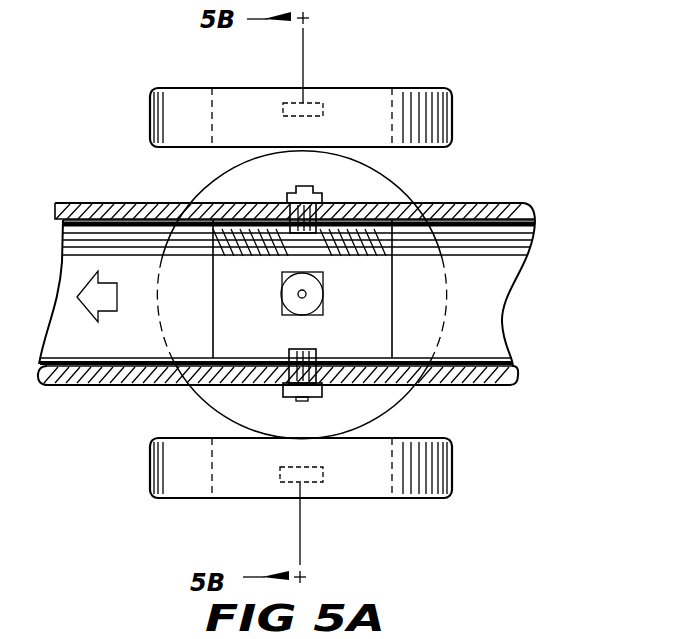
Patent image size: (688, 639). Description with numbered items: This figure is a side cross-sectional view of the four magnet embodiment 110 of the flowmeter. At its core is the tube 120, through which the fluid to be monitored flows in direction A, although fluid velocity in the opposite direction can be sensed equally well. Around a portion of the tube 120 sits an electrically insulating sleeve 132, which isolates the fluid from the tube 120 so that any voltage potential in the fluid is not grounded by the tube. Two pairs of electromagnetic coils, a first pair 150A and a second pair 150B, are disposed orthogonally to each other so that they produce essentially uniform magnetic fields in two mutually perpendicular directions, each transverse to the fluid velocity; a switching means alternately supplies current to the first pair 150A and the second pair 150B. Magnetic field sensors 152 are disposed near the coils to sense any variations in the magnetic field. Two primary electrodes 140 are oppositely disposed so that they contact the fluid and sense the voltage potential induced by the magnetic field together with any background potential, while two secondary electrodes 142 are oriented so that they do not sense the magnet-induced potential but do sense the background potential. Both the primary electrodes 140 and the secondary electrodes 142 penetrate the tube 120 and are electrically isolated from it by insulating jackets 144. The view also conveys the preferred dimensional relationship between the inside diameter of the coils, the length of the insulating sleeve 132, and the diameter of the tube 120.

The four magnet embodiment 110 is at (138, 52).
The tube 120 is at (503, 297).
The insulating sleeve 132 is at (216, 262).
The primary electrodes 140 is at (299, 296).
The secondary electrodes 142 is at (310, 247).
The insulating jackets 144 is at (293, 196).
The first pair of electromagnetic coils 150A is at (362, 94).
The second pair of electromagnetic coils 150B is at (412, 393).
The magnetic field sensors 152 is at (292, 102).